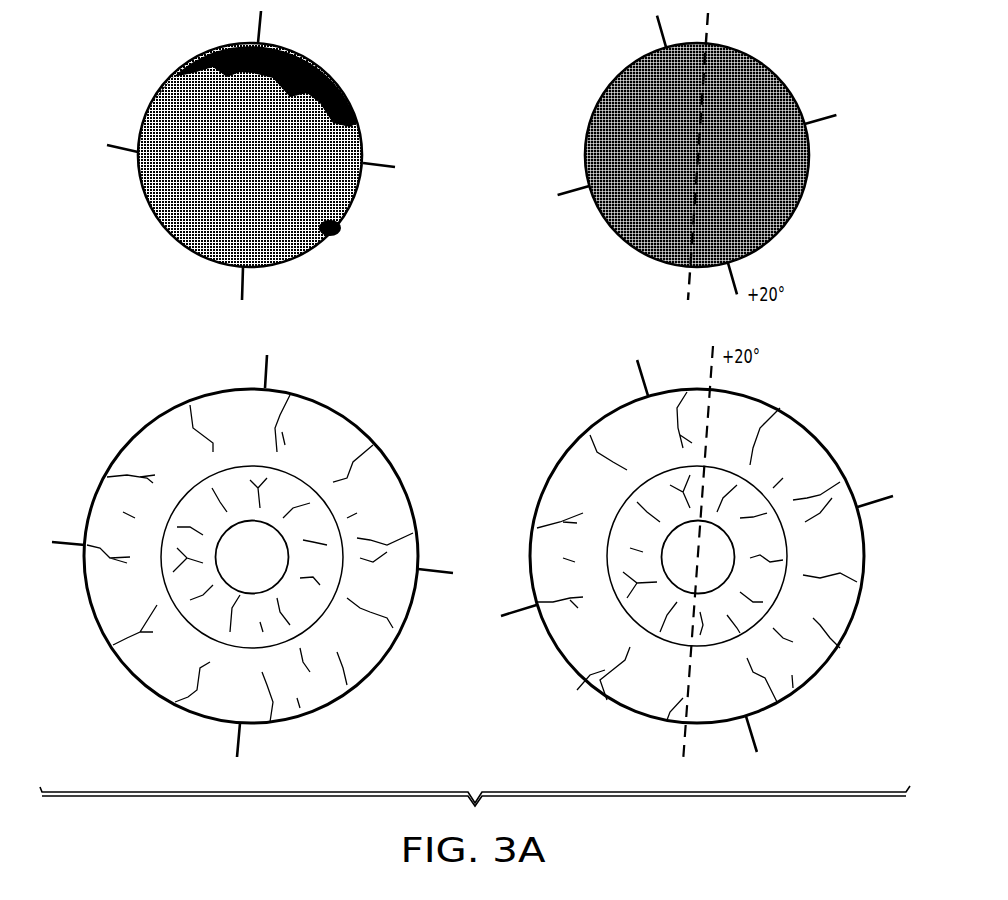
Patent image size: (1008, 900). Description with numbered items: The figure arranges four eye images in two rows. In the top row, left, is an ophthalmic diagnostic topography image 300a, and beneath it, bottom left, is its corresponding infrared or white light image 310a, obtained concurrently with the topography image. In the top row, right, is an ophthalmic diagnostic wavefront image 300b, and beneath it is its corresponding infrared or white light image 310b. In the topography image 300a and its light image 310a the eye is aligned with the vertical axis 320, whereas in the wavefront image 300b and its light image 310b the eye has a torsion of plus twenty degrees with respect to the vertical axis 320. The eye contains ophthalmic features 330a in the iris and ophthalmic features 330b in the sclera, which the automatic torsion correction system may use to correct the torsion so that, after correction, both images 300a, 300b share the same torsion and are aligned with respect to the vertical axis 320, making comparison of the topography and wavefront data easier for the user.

The ophthalmic diagnostic topography image 300a is at (148, 66).
The ophthalmic diagnostic wavefront image 300b is at (803, 64).
The infrared or white light image 310a is at (94, 442).
The infrared or white light image 310b is at (836, 428).
The vertical axis 320 is at (255, 29).
The ophthalmic features in the iris 330a is at (313, 612).
The ophthalmic features in the sclera 330b is at (197, 700).